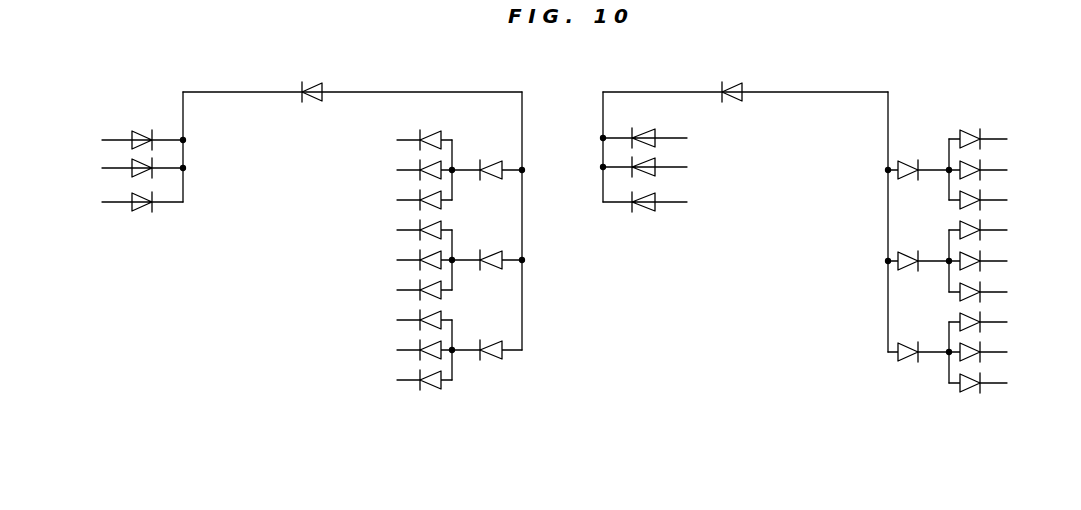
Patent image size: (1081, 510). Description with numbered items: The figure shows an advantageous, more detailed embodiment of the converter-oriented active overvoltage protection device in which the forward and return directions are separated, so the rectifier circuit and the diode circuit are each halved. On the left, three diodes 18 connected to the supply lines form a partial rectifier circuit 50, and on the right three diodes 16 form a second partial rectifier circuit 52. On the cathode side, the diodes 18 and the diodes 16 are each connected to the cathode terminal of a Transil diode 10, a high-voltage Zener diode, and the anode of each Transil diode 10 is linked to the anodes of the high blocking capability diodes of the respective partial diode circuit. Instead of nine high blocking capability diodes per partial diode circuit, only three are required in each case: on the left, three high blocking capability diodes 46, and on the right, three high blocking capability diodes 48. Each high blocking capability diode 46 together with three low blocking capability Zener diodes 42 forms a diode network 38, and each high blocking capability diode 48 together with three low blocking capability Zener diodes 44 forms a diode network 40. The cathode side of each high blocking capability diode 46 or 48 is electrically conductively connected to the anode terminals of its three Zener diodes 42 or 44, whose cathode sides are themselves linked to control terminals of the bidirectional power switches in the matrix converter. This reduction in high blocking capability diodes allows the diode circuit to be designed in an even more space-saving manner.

The Transil diode 10 is at (314, 84).
The diodes 18 is at (129, 187).
The partial rectifier circuit 50 is at (157, 153).
The low blocking capability Zener diodes 42 is at (394, 276).
The diode network 38 is at (480, 207).
The high blocking capability diode 46 is at (502, 221).
The diodes 16 is at (658, 186).
The partial rectifier circuit 52 is at (622, 150).
The high blocking capability diode 48 is at (905, 222).
The diode network 40 is at (944, 205).
The low blocking capability Zener diodes 44 is at (1005, 276).